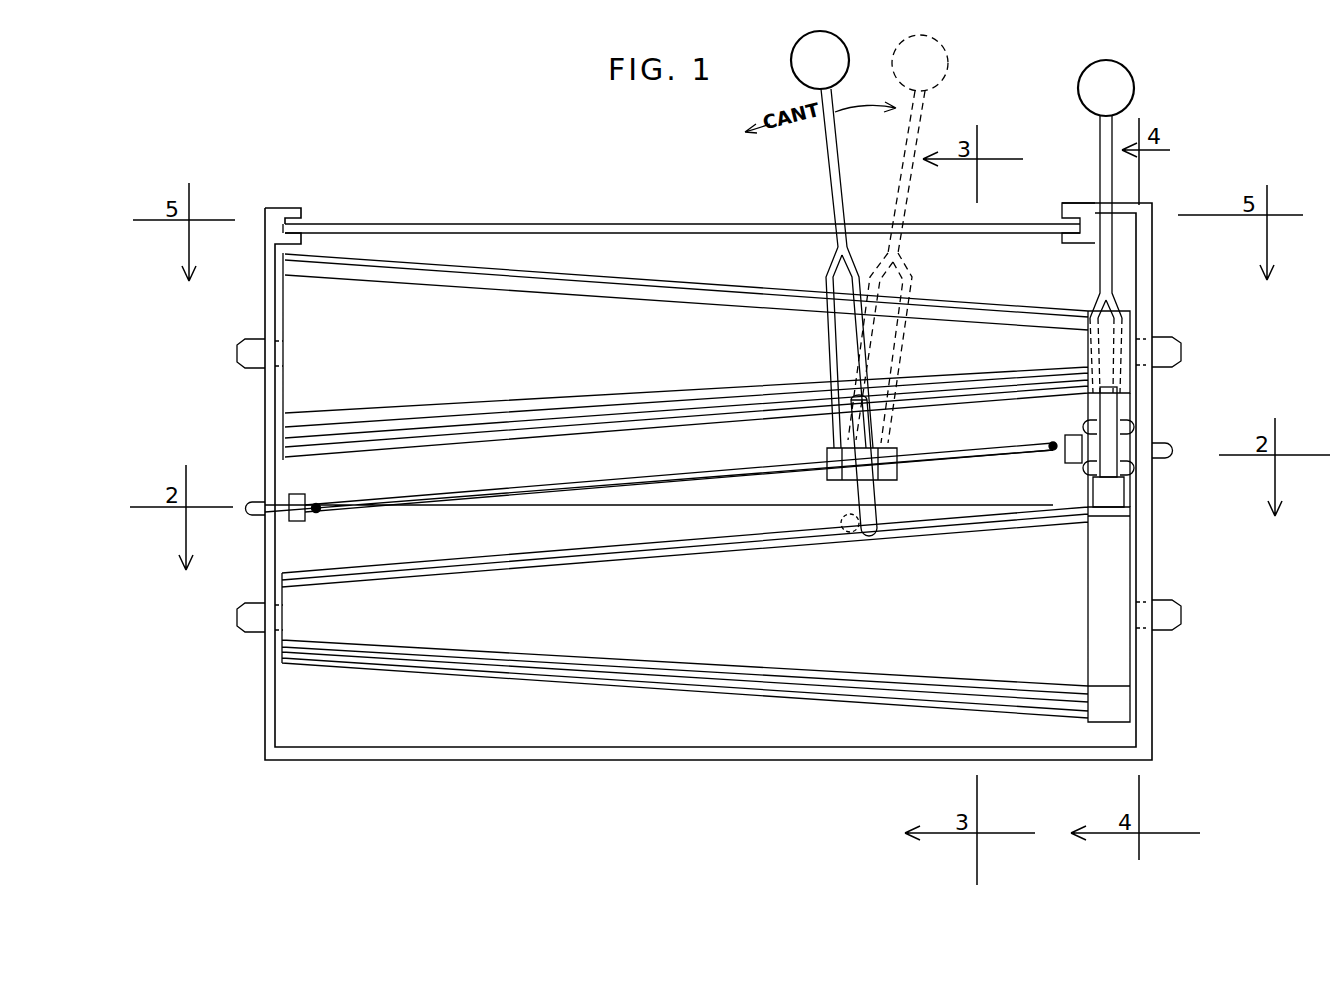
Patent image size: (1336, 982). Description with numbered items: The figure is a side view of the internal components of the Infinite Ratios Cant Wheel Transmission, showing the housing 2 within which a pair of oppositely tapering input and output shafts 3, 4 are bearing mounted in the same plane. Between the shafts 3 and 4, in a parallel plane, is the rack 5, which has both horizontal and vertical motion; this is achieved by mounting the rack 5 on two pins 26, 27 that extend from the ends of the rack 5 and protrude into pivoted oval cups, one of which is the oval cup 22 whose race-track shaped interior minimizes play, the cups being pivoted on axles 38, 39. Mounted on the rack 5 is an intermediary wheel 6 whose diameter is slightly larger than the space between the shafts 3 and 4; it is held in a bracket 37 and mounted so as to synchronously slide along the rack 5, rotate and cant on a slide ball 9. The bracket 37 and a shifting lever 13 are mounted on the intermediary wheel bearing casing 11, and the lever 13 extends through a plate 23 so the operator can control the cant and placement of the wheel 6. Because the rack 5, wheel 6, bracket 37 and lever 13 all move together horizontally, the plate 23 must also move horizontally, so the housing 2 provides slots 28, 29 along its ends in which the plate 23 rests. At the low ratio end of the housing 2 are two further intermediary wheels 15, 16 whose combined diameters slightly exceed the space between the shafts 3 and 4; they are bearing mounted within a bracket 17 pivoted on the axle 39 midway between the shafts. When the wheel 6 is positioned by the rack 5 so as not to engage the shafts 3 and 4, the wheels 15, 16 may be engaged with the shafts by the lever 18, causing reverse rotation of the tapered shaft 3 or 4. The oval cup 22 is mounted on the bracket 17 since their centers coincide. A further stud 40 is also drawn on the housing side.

The housing 2 is at (288, 205).
The input shaft 3 is at (600, 298).
The output shaft 4 is at (560, 566).
The rack 5 is at (568, 484).
The intermediary wheel 6 is at (875, 525).
The slide ball 9 is at (886, 450).
The intermediary wheel bearing casing 11 is at (855, 516).
The shifting lever 13 is at (833, 164).
The intermediary wheel 15 is at (1110, 484).
The intermediary wheel 16 is at (1112, 405).
The bracket 17 is at (1086, 478).
The lever 18 is at (1110, 148).
The oval cup 22 is at (1070, 436).
The plate 23 is at (420, 226).
The pin 26 is at (318, 500).
The pin 27 is at (298, 496).
The slot 28 is at (283, 228).
The slot 29 is at (1085, 210).
The bracket 37 is at (827, 346).
The axle 38 is at (258, 505).
The axle 39 is at (1088, 432).
The stud 40 is at (1168, 450).